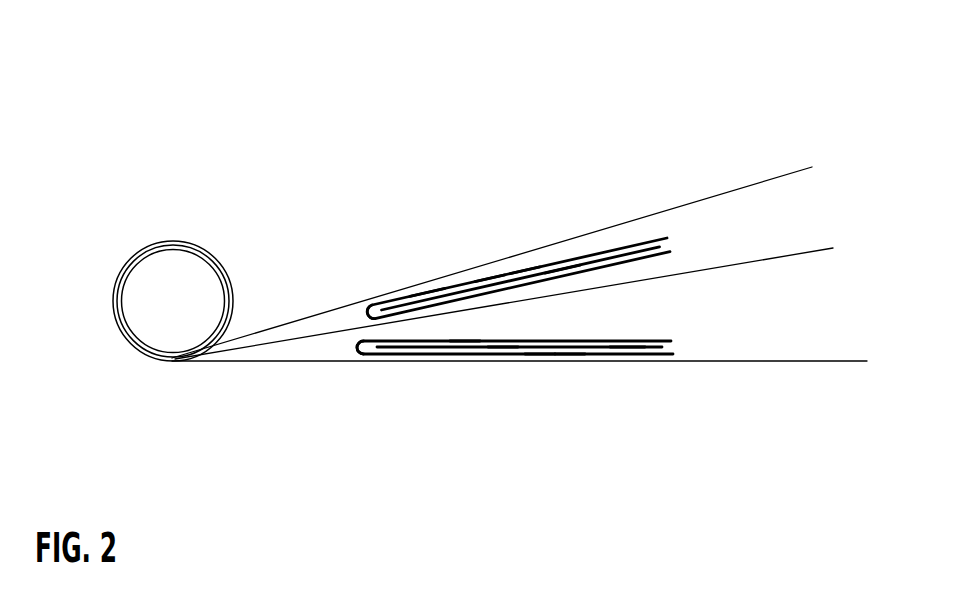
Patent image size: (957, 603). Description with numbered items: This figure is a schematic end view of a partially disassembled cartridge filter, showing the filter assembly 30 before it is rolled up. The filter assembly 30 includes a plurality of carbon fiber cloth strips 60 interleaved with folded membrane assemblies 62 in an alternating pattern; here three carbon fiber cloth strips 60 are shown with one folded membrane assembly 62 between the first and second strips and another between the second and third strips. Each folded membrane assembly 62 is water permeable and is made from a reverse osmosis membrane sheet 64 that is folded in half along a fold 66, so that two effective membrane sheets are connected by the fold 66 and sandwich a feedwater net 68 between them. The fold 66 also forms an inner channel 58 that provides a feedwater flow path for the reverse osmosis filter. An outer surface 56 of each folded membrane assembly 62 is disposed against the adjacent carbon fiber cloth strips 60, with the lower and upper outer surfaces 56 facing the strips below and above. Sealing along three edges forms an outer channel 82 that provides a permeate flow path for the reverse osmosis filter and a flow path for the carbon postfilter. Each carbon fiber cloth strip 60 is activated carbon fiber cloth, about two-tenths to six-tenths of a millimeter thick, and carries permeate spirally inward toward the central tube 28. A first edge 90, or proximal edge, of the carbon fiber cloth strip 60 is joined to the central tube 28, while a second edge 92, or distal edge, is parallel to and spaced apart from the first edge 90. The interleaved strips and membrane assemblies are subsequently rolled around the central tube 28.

The central tube 28 is at (138, 262).
The filter assembly 30 is at (366, 154).
The outer surface 56 is at (525, 270).
The inner channel 58 is at (557, 254).
The carbon fiber cloth strip 60 is at (722, 192).
The folded membrane assembly 62 is at (627, 232).
The reverse osmosis membrane sheet 64 is at (490, 277).
The fold 66 is at (360, 311).
The feedwater net 68 is at (427, 297).
The outer channel 82 is at (462, 343).
The first edge 90 is at (177, 361).
The second edge 92 is at (802, 148).